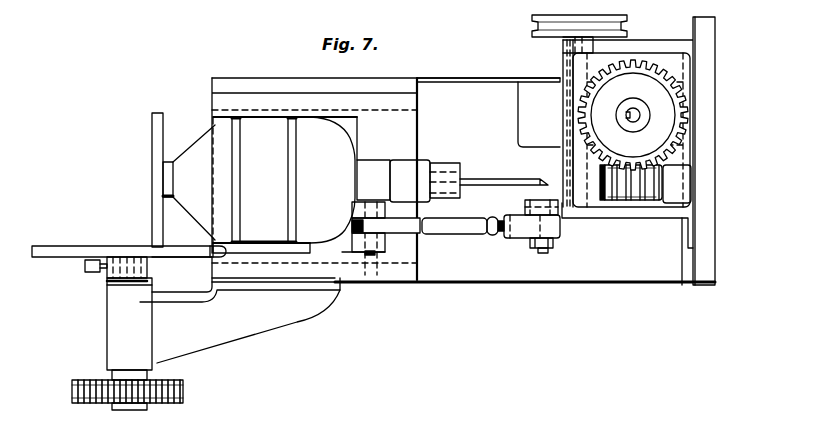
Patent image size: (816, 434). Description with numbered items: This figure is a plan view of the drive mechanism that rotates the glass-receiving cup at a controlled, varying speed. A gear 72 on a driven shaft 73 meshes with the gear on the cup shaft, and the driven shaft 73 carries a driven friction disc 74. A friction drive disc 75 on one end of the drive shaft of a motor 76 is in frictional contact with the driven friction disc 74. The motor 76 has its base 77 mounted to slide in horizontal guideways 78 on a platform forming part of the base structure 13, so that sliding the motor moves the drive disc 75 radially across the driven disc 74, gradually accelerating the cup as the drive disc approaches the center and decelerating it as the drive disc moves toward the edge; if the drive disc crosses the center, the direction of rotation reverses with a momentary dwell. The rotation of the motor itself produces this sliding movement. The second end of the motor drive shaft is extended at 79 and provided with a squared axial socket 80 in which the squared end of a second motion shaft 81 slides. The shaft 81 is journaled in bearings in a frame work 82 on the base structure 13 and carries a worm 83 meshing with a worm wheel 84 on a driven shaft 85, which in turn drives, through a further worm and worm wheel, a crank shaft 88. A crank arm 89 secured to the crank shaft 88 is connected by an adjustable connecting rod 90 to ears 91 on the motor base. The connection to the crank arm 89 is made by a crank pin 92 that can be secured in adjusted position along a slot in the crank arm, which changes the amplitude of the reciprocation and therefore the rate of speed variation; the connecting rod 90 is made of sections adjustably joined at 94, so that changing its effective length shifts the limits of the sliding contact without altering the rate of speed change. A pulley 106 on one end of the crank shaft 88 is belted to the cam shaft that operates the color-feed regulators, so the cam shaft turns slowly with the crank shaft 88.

The base structure 13 is at (492, 283).
The gear 72 is at (184, 392).
The driven shaft 73 is at (110, 278).
The driven friction disc 74 is at (40, 245).
The friction drive disc 75 is at (152, 126).
The motor 76 is at (222, 137).
The base 77 is at (333, 250).
The guideways 78 is at (308, 112).
The extended end of motor drive shaft 79 is at (410, 173).
The squared axial socket 80 is at (458, 166).
The second motion shaft 81 is at (484, 180).
The frame work 82 is at (605, 220).
The worm 83 is at (660, 185).
The worm wheel 84 is at (682, 96).
The driven shaft 85 is at (635, 113).
The crank shaft 88 is at (563, 46).
The crank arm 89 is at (530, 200).
The adjustable connecting rod 90 is at (462, 228).
The ears 91 is at (377, 212).
The crank pin 92 is at (533, 248).
The adjustable connection 94 is at (502, 240).
The pulley 106 is at (597, 13).